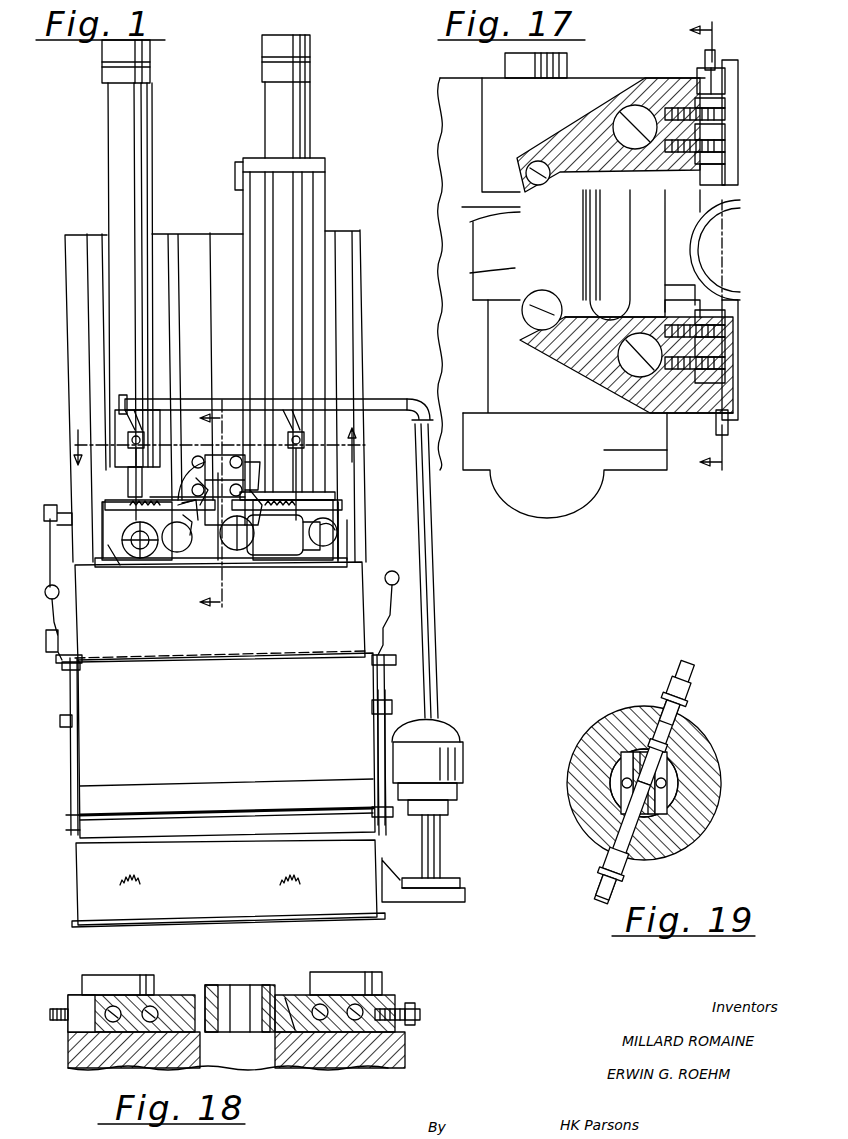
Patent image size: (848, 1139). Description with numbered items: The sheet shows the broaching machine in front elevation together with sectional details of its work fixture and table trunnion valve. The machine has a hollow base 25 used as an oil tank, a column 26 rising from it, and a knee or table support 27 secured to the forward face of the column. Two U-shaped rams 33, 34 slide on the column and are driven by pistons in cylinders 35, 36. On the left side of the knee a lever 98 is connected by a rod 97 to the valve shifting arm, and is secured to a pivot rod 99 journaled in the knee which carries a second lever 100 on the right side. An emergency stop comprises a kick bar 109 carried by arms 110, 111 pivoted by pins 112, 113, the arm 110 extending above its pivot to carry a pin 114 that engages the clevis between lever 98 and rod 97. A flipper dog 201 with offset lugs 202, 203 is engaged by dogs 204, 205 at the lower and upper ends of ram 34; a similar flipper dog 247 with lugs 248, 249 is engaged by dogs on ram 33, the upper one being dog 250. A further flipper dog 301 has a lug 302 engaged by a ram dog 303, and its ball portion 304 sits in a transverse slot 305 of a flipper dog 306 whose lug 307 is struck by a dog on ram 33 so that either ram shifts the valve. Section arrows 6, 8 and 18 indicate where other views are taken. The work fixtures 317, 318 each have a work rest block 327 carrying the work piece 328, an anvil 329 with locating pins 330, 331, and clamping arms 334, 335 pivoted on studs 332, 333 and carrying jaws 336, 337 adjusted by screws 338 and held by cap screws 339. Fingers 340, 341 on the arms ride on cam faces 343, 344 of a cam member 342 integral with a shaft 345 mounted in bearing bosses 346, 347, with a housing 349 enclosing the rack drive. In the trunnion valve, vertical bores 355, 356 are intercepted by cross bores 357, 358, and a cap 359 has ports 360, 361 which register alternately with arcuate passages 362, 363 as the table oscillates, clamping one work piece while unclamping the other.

In FIG. 1, the base 25 is at (77, 870).
In FIG. 1, the column 26 is at (342, 240).
In FIG. 1, the knee or table support 27 is at (100, 766).
In FIG. 1, the ram 33 is at (105, 507).
In FIG. 1, the ram 34 is at (325, 190).
In FIG. 1, the cylinder 35 is at (150, 124).
In FIG. 1, the cylinder 36 is at (310, 114).
In FIG. 1, the section line 6 is at (203, 505).
In FIG. 1, the section line 8 is at (217, 448).
In FIG. 17, the section line 18 is at (719, 248).
In FIG. 1, the rod 97 is at (48, 556).
In FIG. 1, the lever 98 is at (47, 601).
In FIG. 1, the pivot rod 99 is at (78, 672).
In FIG. 1, the lever 100 is at (398, 605).
In FIG. 1, the kick bar 109 is at (300, 790).
In FIG. 1, the arm 110 is at (70, 758).
In FIG. 1, the arm 111 is at (383, 735).
In FIG. 1, the pivot pin 112 is at (58, 722).
In FIG. 1, the pivot pin 113 is at (386, 706).
In FIG. 1, the pin 114 is at (56, 652).
In FIG. 1, the dog 201 is at (258, 492).
In FIG. 1, the lug 202 is at (258, 470).
In FIG. 1, the lug 203 is at (242, 548).
In FIG. 1, the dog 204 is at (283, 553).
In FIG. 1, the dog 205 is at (237, 178).
In FIG. 1, the flipper dog 247 is at (188, 513).
In FIG. 1, the lug 248 is at (198, 487).
In FIG. 1, the lug 249 is at (188, 530).
In FIG. 1, the dog 250 is at (168, 553).
In FIG. 1, the flipper dog 301 is at (290, 430).
In FIG. 1, the lug 302 is at (232, 455).
In FIG. 1, the dog 303 is at (305, 440).
In FIG. 1, the ball portion 304 is at (210, 458).
In FIG. 1, the transverse slot 305 is at (192, 460).
In FIG. 1, the flipper dog 306 is at (195, 470).
In FIG. 1, the lug 307 is at (190, 455).
In FIG. 1, the work fixture 317 is at (120, 552).
In FIG. 1, the work fixture 318 is at (340, 556).
In FIG. 18, the work rest block 327 is at (90, 1066).
In FIG. 17, the work piece 328 is at (735, 205).
In FIG. 18, the work piece 328 is at (287, 975).
In FIG. 17, the anvil 329 is at (650, 243).
In FIG. 17, the locating pin 330 is at (655, 200).
In FIG. 17, the locating pin 331 is at (684, 288).
In FIG. 17, the stud 332 is at (668, 85).
In FIG. 18, the stud 332 is at (338, 985).
In FIG. 17, the stud 333 is at (638, 378).
In FIG. 18, the stud 333 is at (120, 978).
In FIG. 17, the clamping arm 334 is at (573, 125).
In FIG. 17, the clamping arm 335 is at (595, 370).
In FIG. 17, the clamping jaw 336 is at (738, 138).
In FIG. 18, the clamping jaw 336 is at (306, 995).
In FIG. 17, the clamping jaw 337 is at (738, 310).
In FIG. 18, the clamping jaw 337 is at (172, 1000).
In FIG. 17, the screw 338 is at (735, 78).
In FIG. 17, the cap screw 339 is at (738, 112).
In FIG. 17, the finger or boss 340 is at (482, 182).
In FIG. 17, the finger or boss 341 is at (522, 312).
In FIG. 17, the cam member 342 is at (490, 245).
In FIG. 17, the cam face 343 is at (472, 222).
In FIG. 17, the cam face 344 is at (470, 274).
In FIG. 17, the shaft 345 is at (500, 204).
In FIG. 17, the bearing boss 346 is at (480, 118).
In FIG. 17, the bearing boss 347 is at (488, 367).
In FIG. 17, the housing 349 is at (590, 480).
In FIG. 19, the vertical bore 355 is at (626, 771).
In FIG. 19, the vertical bore 356 is at (668, 783).
In FIG. 19, the cross bore 357 is at (628, 715).
In FIG. 19, the cross bore 358 is at (660, 770).
In FIG. 19, the cap 359 is at (580, 790).
In FIG. 19, the port 360 is at (672, 735).
In FIG. 19, the port 361 is at (612, 845).
In FIG. 19, the arcuate passage 362 is at (668, 760).
In FIG. 19, the arcuate passage 363 is at (627, 740).